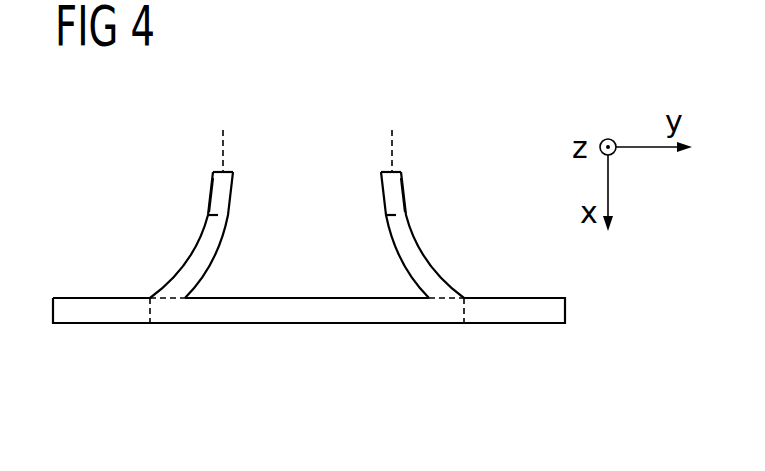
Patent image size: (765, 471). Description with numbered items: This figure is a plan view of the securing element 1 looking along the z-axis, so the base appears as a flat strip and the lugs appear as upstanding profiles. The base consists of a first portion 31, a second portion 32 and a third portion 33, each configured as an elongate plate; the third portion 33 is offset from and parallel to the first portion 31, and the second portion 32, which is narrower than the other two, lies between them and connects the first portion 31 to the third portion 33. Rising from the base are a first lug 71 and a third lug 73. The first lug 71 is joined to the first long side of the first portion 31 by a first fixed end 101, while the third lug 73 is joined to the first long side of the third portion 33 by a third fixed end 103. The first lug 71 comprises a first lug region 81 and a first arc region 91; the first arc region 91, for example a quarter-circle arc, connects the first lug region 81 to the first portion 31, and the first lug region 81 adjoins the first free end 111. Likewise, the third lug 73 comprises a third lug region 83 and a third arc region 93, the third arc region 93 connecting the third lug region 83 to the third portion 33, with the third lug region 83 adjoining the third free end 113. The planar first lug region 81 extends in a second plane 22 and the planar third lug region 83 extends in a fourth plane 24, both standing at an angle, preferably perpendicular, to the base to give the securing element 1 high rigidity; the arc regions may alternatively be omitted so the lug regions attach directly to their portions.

The securing element 1 is at (496, 104).
The second plane 22 is at (391, 152).
The fourth plane 24 is at (225, 132).
The first portion 31 is at (536, 314).
The second portion 32 is at (312, 313).
The third portion 33 is at (104, 312).
The first lug 71 is at (397, 258).
The third lug 73 is at (222, 261).
The first lug region 81 is at (396, 190).
The third lug region 83 is at (218, 189).
The first arc region 91 is at (425, 272).
The third arc region 93 is at (190, 270).
The first fixed end 101 is at (460, 306).
The third fixed end 103 is at (153, 306).
The first free end 111 is at (398, 172).
The third free end 113 is at (218, 172).